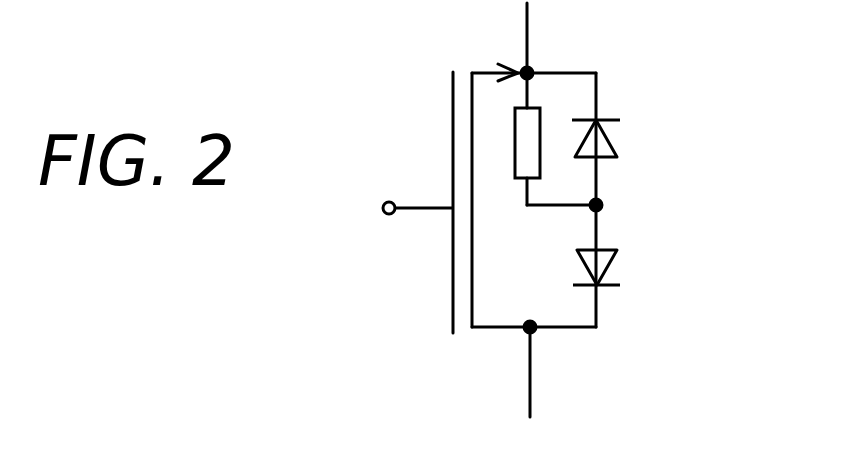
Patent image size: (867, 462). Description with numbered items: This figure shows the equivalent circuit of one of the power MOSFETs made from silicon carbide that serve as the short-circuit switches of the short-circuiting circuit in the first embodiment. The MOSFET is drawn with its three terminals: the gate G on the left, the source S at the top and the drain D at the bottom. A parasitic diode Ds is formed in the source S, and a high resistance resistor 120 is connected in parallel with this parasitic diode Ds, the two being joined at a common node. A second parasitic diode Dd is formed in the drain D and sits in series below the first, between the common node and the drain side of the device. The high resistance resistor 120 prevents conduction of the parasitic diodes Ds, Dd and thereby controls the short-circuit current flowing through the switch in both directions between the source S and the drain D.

The high resistance resistor 120 is at (515, 148).
The parasitic diode Ds is at (613, 140).
The parasitic diode Dd is at (610, 260).
The gate G is at (402, 210).
The source S is at (508, 46).
The drain D is at (506, 352).